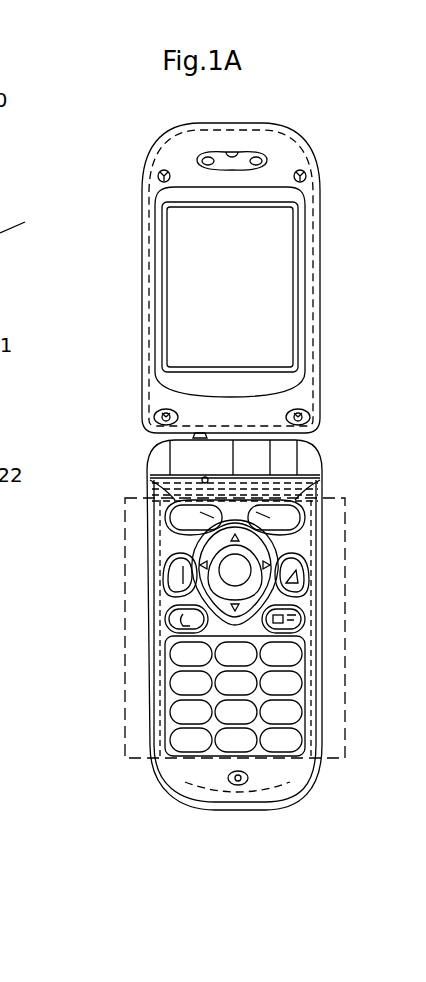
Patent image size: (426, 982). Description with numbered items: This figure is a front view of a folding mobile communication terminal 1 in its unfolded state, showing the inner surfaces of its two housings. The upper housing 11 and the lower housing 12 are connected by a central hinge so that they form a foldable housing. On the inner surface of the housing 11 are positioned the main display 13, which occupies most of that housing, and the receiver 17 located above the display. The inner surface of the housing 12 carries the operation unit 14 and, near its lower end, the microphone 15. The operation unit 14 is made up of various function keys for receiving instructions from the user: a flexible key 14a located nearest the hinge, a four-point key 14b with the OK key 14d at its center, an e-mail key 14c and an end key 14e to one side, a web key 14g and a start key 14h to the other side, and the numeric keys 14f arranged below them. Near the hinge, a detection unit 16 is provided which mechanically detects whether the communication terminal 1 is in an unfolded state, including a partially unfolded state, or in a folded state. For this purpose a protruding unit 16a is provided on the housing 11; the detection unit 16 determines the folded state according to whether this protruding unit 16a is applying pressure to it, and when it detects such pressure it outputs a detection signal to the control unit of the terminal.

The folding mobile communication terminal 1 is at (240, 824).
The housing 11 is at (142, 250).
The housing 12 is at (152, 685).
The main display 13 is at (273, 202).
The operation unit 14 is at (350, 756).
The flexible key 14a is at (202, 515).
The four-point key 14b is at (253, 537).
The e-mail key 14c is at (298, 572).
The OK key 14d is at (252, 567).
The end key 14e is at (300, 615).
The numeric keys 14f is at (300, 690).
The web key 14g is at (170, 568).
The start key 14h is at (173, 614).
The microphone 15 is at (250, 786).
The detection unit 16 is at (200, 478).
The protruding unit 16a is at (200, 430).
The receiver 17 is at (246, 154).